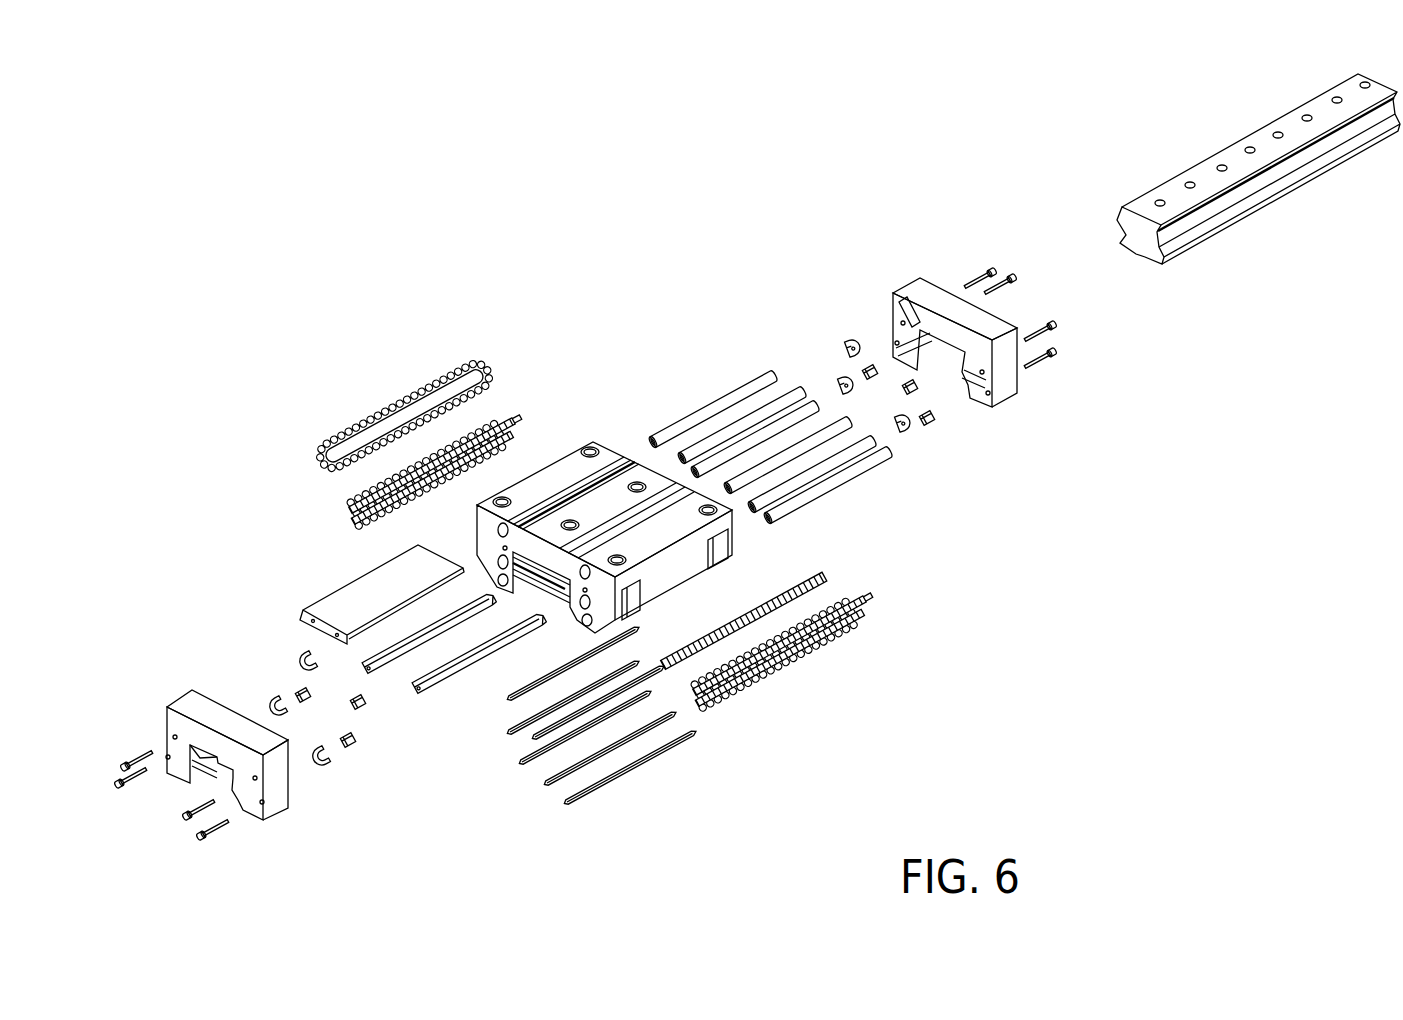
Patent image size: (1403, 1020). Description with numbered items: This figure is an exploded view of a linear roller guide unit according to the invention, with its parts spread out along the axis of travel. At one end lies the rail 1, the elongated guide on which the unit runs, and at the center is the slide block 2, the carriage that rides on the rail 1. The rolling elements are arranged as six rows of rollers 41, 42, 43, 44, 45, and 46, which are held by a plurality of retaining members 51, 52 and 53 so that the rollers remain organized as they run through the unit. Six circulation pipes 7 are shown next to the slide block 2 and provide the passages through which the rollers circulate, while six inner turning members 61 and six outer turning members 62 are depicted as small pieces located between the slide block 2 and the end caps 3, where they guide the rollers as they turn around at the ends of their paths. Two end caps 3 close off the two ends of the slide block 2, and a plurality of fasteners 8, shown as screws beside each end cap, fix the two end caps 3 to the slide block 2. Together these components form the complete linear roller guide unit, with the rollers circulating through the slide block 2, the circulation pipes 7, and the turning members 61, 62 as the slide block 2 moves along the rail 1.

The rail 1 is at (1174, 165).
The slide block 2 is at (557, 445).
The end caps 3 is at (914, 278).
The circulation pipes 7 is at (719, 383).
The fasteners 8 is at (1050, 318).
The rollers 41 is at (827, 575).
The rollers 42 is at (789, 664).
The rollers 43 is at (393, 390).
The rollers 44 is at (517, 426).
The rollers 45 is at (869, 600).
The rollers 46 is at (424, 452).
The retaining member 51 is at (305, 607).
The retaining member 52 is at (441, 690).
The retaining member 53 is at (637, 767).
The inner turning members 61 is at (842, 340).
The outer turning members 62 is at (938, 428).